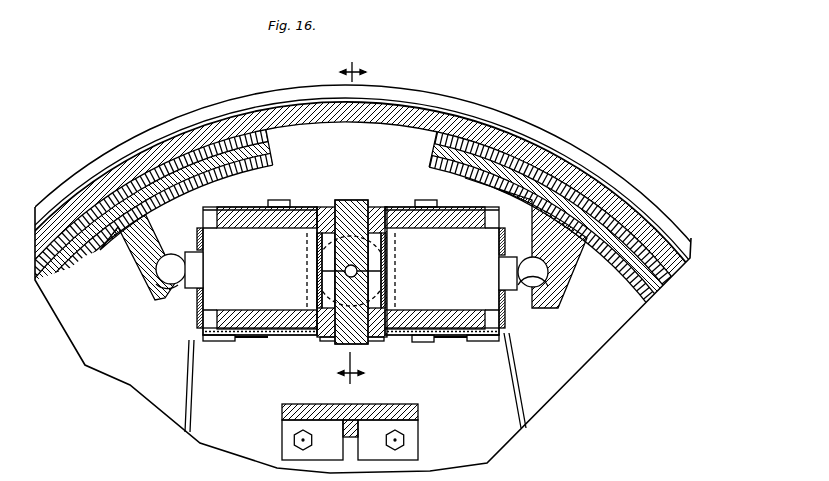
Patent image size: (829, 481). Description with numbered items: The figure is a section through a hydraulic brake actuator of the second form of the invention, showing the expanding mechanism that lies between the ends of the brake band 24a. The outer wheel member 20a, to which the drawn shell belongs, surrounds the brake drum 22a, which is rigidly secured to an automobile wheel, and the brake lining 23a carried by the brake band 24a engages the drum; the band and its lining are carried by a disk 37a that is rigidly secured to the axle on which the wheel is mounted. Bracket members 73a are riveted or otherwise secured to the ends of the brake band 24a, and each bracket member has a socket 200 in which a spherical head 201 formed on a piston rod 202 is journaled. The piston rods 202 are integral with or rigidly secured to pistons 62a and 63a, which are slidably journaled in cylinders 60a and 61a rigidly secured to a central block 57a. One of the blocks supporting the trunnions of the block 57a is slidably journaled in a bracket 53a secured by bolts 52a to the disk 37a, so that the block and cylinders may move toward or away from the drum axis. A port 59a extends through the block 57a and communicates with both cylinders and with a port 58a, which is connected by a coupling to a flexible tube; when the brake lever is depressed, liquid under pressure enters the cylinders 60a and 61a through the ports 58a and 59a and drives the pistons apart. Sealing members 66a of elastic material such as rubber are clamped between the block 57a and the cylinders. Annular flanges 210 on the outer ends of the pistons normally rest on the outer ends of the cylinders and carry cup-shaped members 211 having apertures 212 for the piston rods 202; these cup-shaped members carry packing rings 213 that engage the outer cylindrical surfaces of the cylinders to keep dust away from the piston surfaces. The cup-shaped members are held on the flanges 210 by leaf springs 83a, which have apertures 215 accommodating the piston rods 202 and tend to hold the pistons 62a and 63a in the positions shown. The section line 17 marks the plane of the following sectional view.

The section line 17- 17 is at (352, 223).
The outer ring shell 20a is at (680, 235).
The brake drum 22a is at (682, 264).
The brake lining 23a is at (678, 287).
The brake band 24a is at (655, 283).
The disk 37a is at (610, 338).
The bolts 52a is at (293, 440).
The bracket 53a is at (318, 408).
The block 57a is at (350, 202).
The port 58a is at (322, 272).
The port 59a is at (358, 271).
The cylinder 60a is at (292, 211).
The cylinder 61a is at (424, 200).
The piston 62a is at (243, 232).
The piston 63a is at (400, 225).
The sealing members 66a is at (318, 246).
The bracket members 73a is at (126, 250).
The leaf springs 83a is at (193, 374).
The sockets 200 is at (155, 298).
The spherical heads 201 is at (166, 272).
The piston rods 202 is at (190, 253).
The annular flanges 210 is at (218, 341).
The cup-shaped members 211 is at (262, 338).
The apertures 212 is at (198, 268).
The packing rings 213 is at (282, 200).
The apertures 215 is at (193, 300).